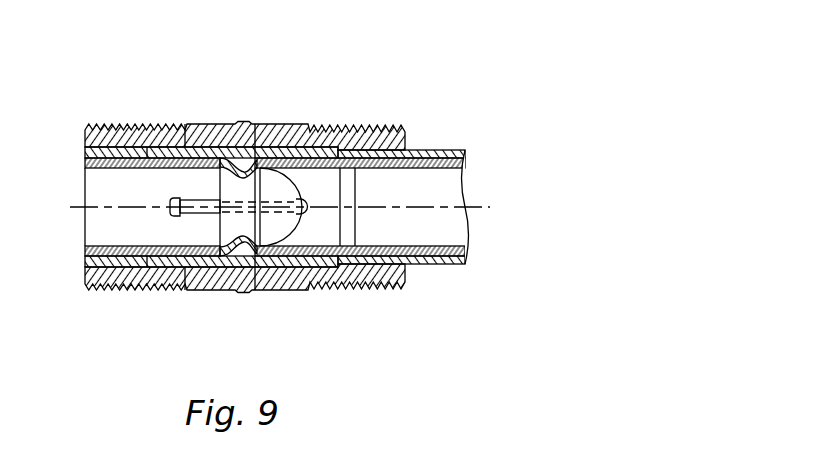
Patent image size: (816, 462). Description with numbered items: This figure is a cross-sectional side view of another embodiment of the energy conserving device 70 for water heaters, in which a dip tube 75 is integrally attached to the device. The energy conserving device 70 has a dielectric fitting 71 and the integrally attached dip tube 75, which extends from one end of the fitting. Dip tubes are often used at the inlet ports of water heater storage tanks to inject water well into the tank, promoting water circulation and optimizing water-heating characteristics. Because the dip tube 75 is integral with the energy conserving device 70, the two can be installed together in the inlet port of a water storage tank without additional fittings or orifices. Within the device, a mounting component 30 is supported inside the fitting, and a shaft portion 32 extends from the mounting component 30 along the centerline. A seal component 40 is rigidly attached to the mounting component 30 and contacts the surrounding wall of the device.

The energy conserving device 70 is at (219, 96).
The dielectric fitting 71 is at (228, 299).
The dip tube 75 is at (443, 155).
The seal component 40 is at (301, 189).
The shaft portion 32 is at (180, 198).
The mounting component 30 is at (213, 234).